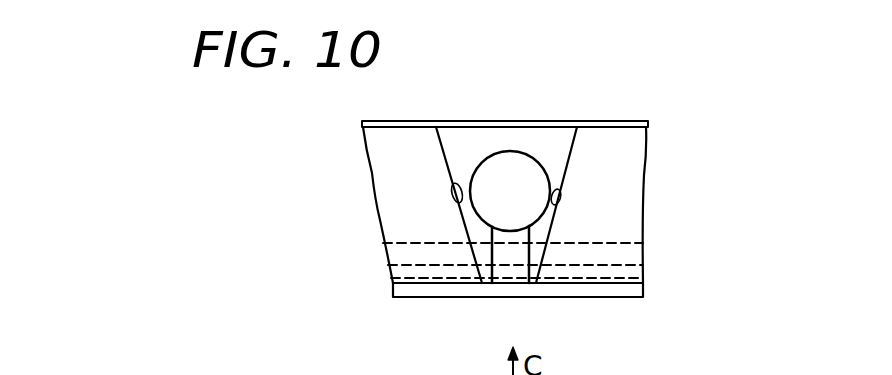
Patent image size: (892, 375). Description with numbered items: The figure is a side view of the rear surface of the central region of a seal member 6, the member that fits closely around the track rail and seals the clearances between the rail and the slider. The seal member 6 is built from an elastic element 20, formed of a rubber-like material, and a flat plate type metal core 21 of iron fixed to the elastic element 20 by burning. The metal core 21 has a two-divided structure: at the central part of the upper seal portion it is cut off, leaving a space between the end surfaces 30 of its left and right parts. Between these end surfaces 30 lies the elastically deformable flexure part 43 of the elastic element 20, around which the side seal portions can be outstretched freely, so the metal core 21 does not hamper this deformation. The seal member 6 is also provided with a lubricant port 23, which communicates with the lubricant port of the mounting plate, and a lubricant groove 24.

The seal member 6 is at (615, 116).
The elastic element 20 is at (547, 145).
The metal core 21 is at (387, 174).
The lubricant port 23 is at (476, 183).
The lubricant groove 24 is at (493, 255).
The end surfaces 30 is at (455, 198).
The flexure part 43 is at (517, 137).